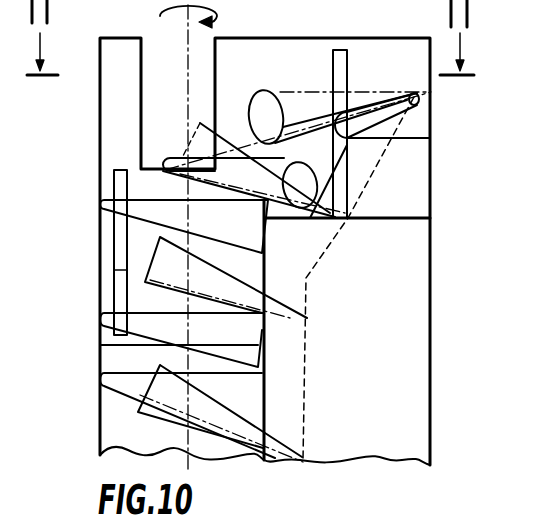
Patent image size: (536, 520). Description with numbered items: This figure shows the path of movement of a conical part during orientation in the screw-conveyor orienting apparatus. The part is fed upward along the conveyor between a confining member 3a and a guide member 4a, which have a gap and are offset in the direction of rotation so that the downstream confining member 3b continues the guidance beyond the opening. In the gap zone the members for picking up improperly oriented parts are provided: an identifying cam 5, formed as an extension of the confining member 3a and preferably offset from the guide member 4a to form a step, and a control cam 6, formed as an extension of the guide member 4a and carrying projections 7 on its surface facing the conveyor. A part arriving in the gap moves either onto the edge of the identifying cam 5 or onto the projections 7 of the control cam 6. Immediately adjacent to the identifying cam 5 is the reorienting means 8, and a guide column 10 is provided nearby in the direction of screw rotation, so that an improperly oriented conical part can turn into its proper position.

The control cam 6 is at (107, 55).
The projections 7 is at (118, 230).
The confining member 3a is at (108, 357).
The confining member 3b is at (345, 75).
The guide member 4a is at (293, 378).
The identifying cam 5 is at (350, 146).
The reorienting means 8 is at (432, 105).
The guide column 10 is at (423, 132).